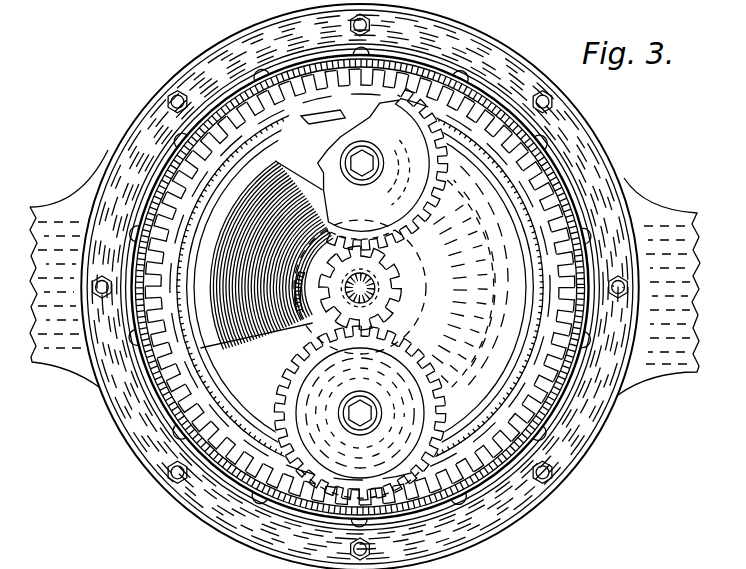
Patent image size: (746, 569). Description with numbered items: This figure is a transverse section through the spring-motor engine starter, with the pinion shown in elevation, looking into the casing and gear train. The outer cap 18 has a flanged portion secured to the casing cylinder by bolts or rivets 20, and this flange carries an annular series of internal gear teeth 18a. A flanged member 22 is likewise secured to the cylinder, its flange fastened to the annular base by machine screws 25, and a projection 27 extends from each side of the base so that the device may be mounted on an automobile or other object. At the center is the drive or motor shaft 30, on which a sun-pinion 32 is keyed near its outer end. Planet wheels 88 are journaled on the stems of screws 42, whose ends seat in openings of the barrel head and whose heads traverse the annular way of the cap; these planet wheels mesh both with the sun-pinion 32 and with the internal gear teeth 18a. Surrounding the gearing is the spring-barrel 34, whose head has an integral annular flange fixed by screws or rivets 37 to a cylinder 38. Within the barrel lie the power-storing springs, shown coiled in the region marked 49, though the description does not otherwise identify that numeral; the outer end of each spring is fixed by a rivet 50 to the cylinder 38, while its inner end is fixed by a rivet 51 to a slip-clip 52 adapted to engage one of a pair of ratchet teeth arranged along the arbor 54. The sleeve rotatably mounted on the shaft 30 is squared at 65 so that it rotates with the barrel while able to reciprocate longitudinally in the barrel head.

The cap 18 is at (568, 170).
The internal gear teeth 18a is at (578, 192).
The bolts or rivets 20 is at (558, 152).
The flanged member 22 is at (222, 100).
The machine screws 25 is at (558, 110).
The projection 27 is at (47, 366).
The drive or motor shaft 30 is at (378, 281).
The pinion 32 is at (390, 291).
The spring-barrel 34 is at (158, 386).
The screws or rivets 37 is at (468, 100).
The cylinder 38 is at (313, 115).
The screws 42 is at (373, 157).
The spring drum 49 is at (268, 192).
The rivet 50 is at (354, 140).
The rivet 51 is at (282, 335).
The slip-clip 52 is at (303, 290).
The arbor 54 is at (433, 322).
The squared portion of sleeve 65 is at (386, 293).
The planet wheels 88 is at (438, 200).